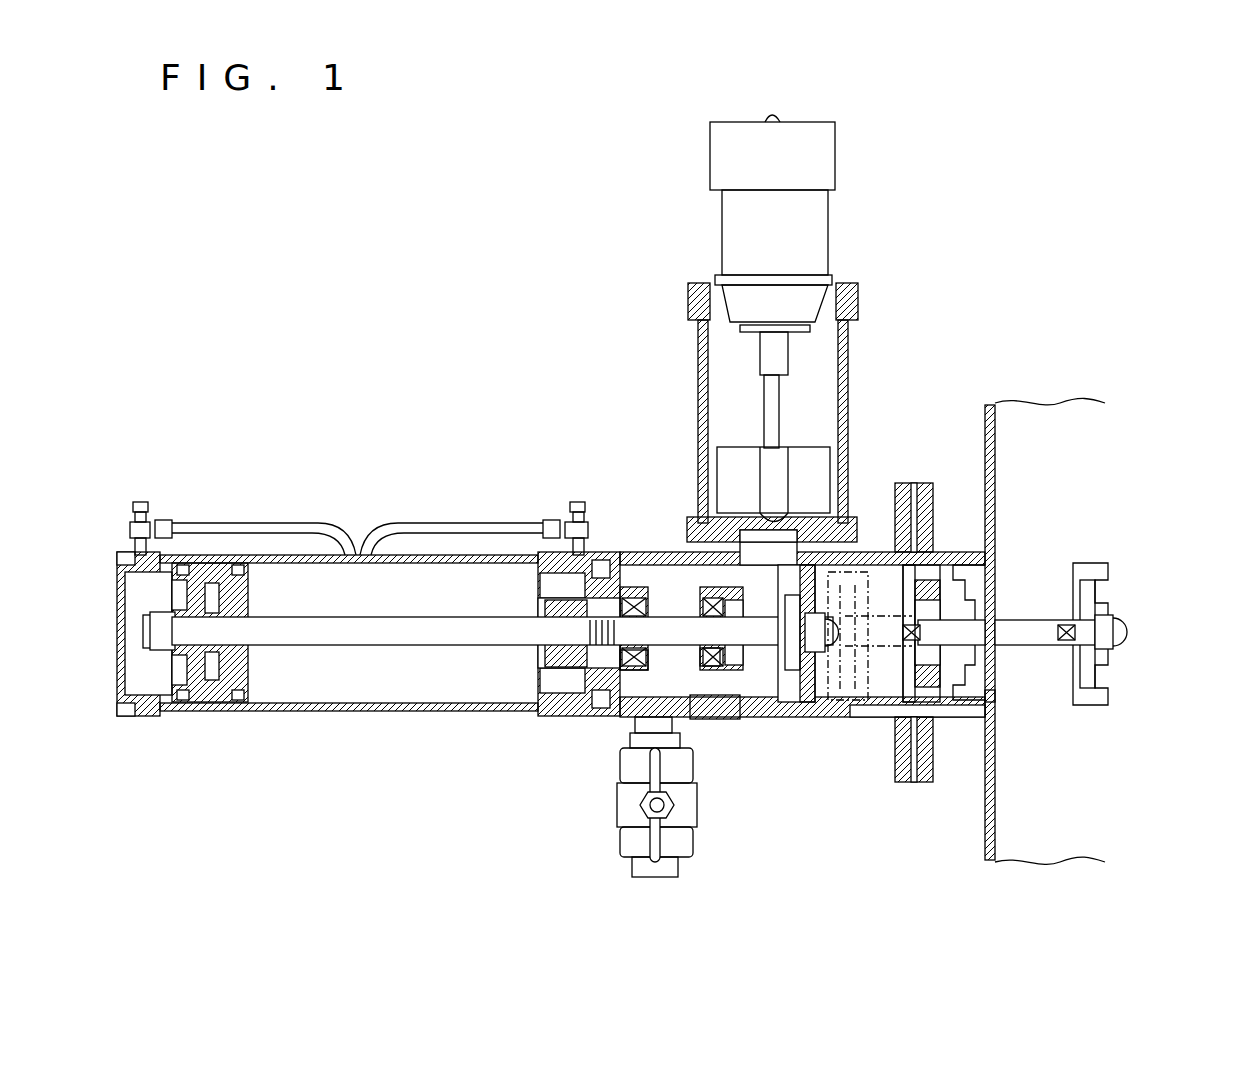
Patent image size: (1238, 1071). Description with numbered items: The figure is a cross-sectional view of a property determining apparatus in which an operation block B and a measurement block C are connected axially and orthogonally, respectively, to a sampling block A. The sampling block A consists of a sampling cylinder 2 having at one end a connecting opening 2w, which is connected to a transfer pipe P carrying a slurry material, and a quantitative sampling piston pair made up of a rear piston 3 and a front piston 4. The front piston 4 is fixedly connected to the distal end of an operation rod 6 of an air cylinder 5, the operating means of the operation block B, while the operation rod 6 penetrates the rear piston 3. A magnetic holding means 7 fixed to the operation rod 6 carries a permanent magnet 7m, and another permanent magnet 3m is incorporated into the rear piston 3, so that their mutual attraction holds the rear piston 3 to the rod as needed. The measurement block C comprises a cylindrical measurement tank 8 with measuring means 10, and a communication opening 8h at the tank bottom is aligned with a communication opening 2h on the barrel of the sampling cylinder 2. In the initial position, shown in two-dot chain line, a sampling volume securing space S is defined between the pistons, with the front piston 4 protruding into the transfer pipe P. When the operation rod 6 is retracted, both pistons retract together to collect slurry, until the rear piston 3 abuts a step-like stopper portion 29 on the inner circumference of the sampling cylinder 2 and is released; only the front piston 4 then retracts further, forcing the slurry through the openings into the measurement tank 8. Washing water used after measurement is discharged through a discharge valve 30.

The sampling cylinder 2 is at (870, 718).
The communication opening 2h is at (742, 552).
The connecting opening 2w is at (1003, 697).
The rear piston 3 is at (770, 722).
The permanent magnet 3m is at (678, 632).
The front piston 4 is at (872, 580).
The air cylinder 5 is at (400, 712).
The operation rod 6 is at (700, 652).
The holding means 7 is at (640, 555).
The permanent magnet 7m is at (622, 658).
The measurement tank 8 is at (850, 357).
The communication opening 8h is at (760, 528).
The measuring means 10 is at (848, 205).
The stopper portion 29 is at (727, 722).
The discharge valve 30 is at (695, 845).
The sampling block A is at (790, 752).
The operation block B is at (325, 745).
The measurement block C is at (902, 304).
The transfer pipe P is at (988, 840).
The sampling volume securing space S is at (996, 672).